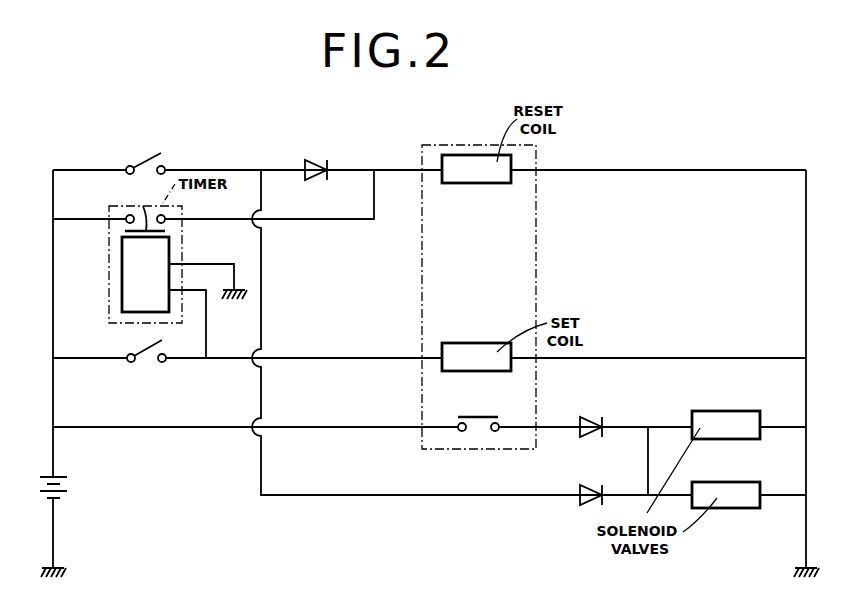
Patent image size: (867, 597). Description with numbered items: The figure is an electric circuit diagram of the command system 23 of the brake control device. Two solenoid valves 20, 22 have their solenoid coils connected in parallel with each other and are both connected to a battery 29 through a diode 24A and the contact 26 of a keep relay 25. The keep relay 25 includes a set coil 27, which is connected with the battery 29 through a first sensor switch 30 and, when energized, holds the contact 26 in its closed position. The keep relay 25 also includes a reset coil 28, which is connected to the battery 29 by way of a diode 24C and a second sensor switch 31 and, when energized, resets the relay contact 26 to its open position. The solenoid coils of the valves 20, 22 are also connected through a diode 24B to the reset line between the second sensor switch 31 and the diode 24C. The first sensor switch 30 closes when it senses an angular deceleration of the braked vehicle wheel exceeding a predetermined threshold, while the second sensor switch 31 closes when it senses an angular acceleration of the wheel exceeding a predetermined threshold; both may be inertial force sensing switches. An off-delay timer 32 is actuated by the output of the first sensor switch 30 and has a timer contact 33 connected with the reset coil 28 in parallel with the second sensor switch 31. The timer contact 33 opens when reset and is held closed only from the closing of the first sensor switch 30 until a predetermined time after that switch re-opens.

The solenoid valve 20 is at (718, 411).
The solenoid valve 22 is at (718, 482).
The command system 23 is at (586, 166).
The diode 24A is at (584, 416).
The diode 24B is at (584, 485).
The diode 24C is at (307, 160).
The keep relay 25 is at (536, 276).
The contact 26 is at (478, 417).
The set coil 27 is at (468, 343).
The reset coil 28 is at (480, 176).
The battery 29 is at (69, 485).
The first sensor switch 30 is at (146, 350).
The second sensor switch 31 is at (139, 166).
The off-delay timer 32 is at (109, 277).
The timer contact 33 is at (145, 202).